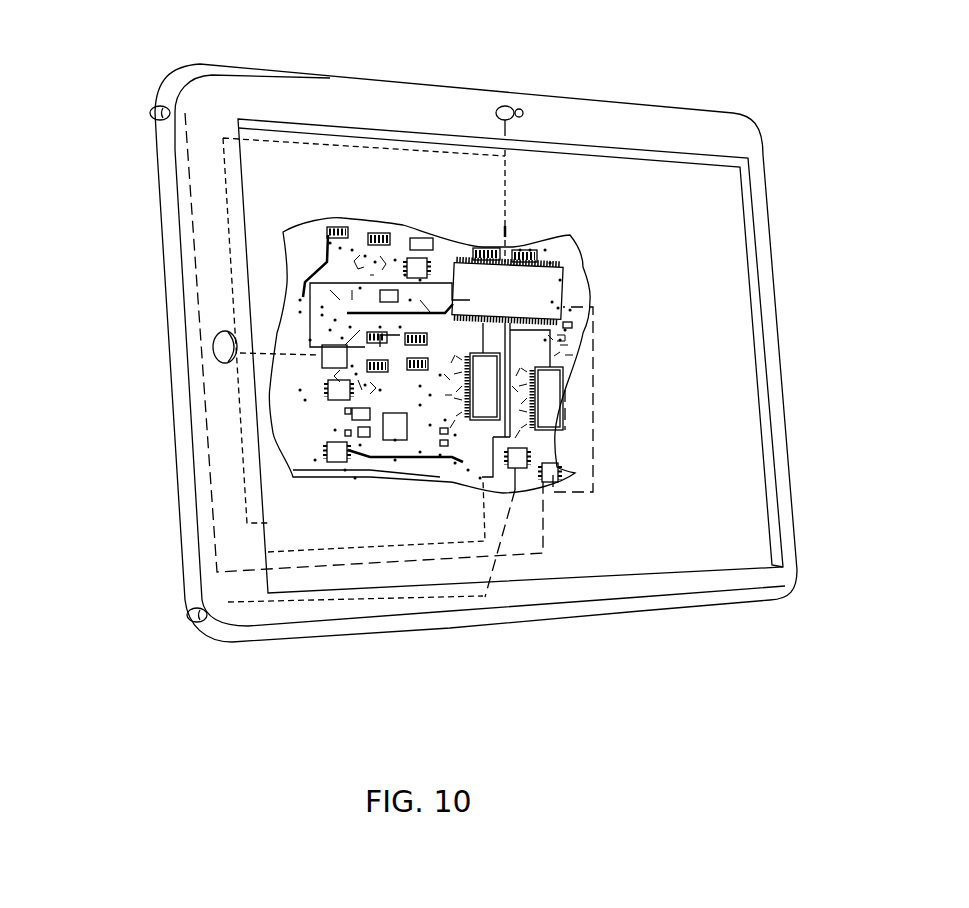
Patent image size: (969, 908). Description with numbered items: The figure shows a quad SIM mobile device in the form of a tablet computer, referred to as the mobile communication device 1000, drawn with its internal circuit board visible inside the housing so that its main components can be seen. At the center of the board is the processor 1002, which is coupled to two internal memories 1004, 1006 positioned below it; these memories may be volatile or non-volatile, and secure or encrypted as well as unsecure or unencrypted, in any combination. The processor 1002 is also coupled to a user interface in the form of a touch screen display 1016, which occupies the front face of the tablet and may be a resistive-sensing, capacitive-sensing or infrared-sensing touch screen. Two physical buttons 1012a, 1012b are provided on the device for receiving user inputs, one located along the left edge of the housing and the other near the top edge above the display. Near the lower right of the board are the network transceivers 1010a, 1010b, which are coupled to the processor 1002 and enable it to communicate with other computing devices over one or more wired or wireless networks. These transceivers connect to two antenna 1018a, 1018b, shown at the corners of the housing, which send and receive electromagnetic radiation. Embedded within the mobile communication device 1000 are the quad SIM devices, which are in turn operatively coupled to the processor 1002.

The mobile communication device 1000 is at (302, 69).
The processor 1002 is at (507, 291).
The internal memory 1004 is at (472, 390).
The internal memory 1006 is at (537, 402).
The network transceiver 1010a is at (533, 455).
The network transceiver 1010b is at (563, 482).
The physical button 1012a is at (208, 347).
The physical button 1012b is at (510, 100).
The touch screen display 1016 is at (722, 260).
The antenna 1018a is at (186, 611).
The antenna 1018b is at (152, 110).